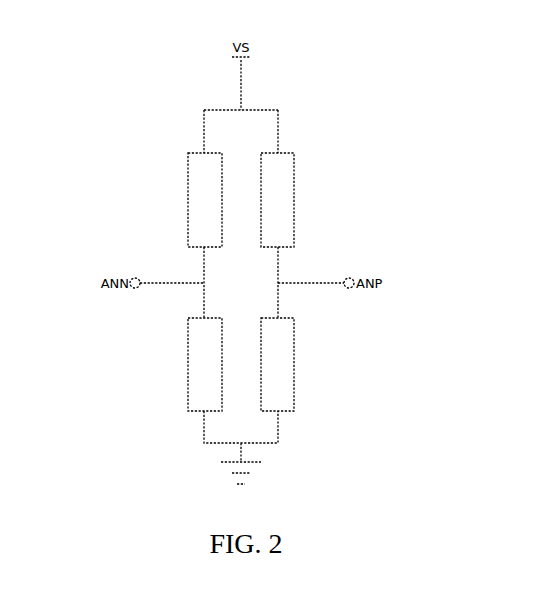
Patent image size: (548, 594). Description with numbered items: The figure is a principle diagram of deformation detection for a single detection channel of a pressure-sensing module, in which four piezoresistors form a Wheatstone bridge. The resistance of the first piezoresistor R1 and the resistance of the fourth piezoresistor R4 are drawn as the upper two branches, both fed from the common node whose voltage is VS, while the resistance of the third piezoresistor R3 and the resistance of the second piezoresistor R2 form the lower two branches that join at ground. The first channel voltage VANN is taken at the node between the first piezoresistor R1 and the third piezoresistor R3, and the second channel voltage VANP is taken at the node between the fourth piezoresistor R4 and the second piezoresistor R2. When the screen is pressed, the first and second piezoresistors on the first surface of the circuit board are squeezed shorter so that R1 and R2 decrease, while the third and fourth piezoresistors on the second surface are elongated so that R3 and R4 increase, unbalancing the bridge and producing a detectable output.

The resistance of the first piezoresistor R1 is at (205, 200).
The resistance of the second piezoresistor R2 is at (277, 364).
The resistance of the third piezoresistor R3 is at (205, 364).
The resistance of the fourth piezoresistor R4 is at (277, 200).